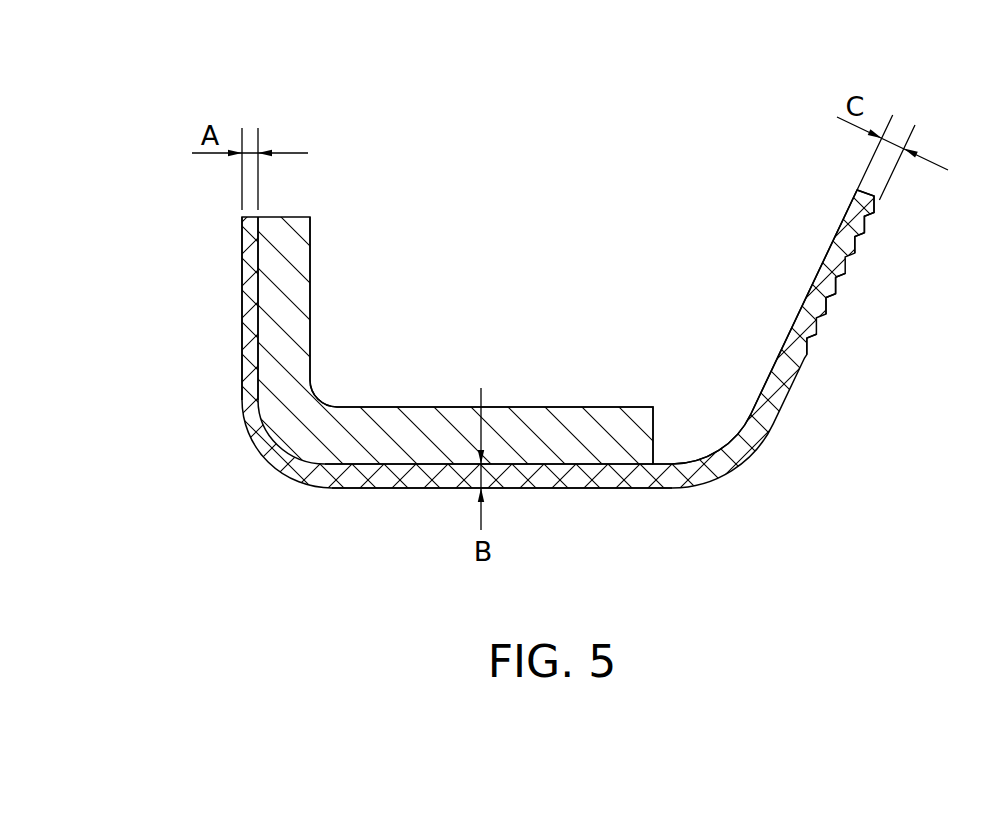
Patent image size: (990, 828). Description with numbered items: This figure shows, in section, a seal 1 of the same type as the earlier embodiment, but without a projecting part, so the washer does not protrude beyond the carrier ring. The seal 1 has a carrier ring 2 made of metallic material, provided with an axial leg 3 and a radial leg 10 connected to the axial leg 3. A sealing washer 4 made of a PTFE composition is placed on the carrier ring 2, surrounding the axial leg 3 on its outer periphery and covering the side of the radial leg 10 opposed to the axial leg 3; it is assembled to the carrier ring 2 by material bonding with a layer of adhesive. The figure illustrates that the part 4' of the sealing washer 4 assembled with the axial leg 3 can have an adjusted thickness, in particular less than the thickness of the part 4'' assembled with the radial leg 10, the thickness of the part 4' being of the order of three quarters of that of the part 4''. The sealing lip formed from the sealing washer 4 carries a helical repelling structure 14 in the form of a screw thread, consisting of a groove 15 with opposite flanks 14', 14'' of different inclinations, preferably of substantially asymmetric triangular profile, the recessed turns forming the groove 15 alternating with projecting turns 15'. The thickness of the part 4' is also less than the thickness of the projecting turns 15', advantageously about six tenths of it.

The seal 1 is at (719, 521).
The carrier ring 2 is at (398, 273).
The axial leg 3 is at (300, 316).
The radial leg 10 is at (418, 405).
The sealing washer 4 is at (495, 388).
The part of the sealing washer assembled with the axial leg 4' is at (185, 308).
The part of the sealing washer assembled with the radial leg 4'' is at (498, 530).
The repelling structure 14 is at (918, 207).
The flank of the groove 14' is at (886, 354).
The flank of the groove 14'' is at (889, 333).
The groove 15 is at (889, 316).
The projecting turns 15' is at (874, 342).